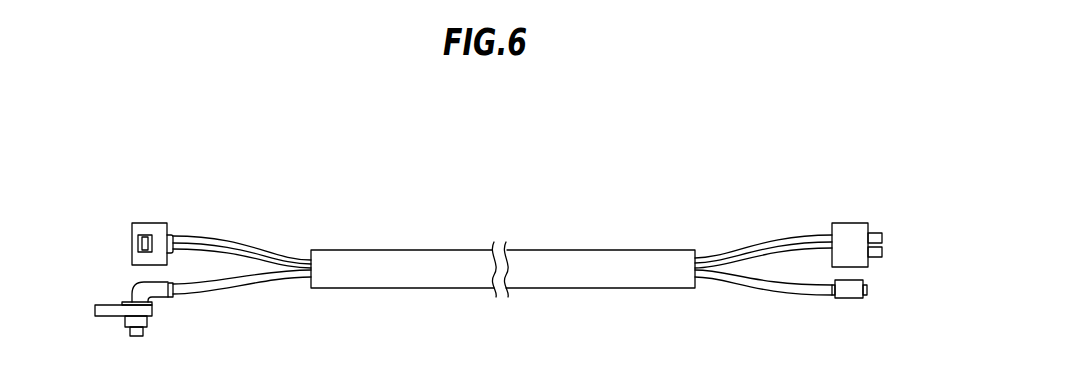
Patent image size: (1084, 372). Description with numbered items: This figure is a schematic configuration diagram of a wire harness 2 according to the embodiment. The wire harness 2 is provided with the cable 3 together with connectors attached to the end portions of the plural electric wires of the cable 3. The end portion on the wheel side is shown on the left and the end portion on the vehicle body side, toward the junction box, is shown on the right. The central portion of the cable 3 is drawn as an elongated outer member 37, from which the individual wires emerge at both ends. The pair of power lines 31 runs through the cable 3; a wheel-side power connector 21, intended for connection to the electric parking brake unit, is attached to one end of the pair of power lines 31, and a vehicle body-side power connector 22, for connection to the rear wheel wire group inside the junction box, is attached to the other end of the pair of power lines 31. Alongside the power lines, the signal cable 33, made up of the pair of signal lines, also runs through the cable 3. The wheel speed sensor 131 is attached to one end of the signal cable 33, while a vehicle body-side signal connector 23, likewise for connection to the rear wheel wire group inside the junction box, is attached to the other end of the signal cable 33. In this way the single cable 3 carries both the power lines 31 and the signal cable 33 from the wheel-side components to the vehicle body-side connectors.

The wire harness 2 is at (644, 189).
The cable 3 is at (531, 236).
The exterior sheath 37 is at (622, 289).
The pair of power lines 31 is at (208, 249).
The signal cable 33 is at (202, 291).
The wheel-side power connector 21 is at (132, 248).
The vehicle body-side power connector 22 is at (883, 252).
The vehicle body-side signal connector 23 is at (867, 290).
The wheel speed sensor 131 is at (131, 293).